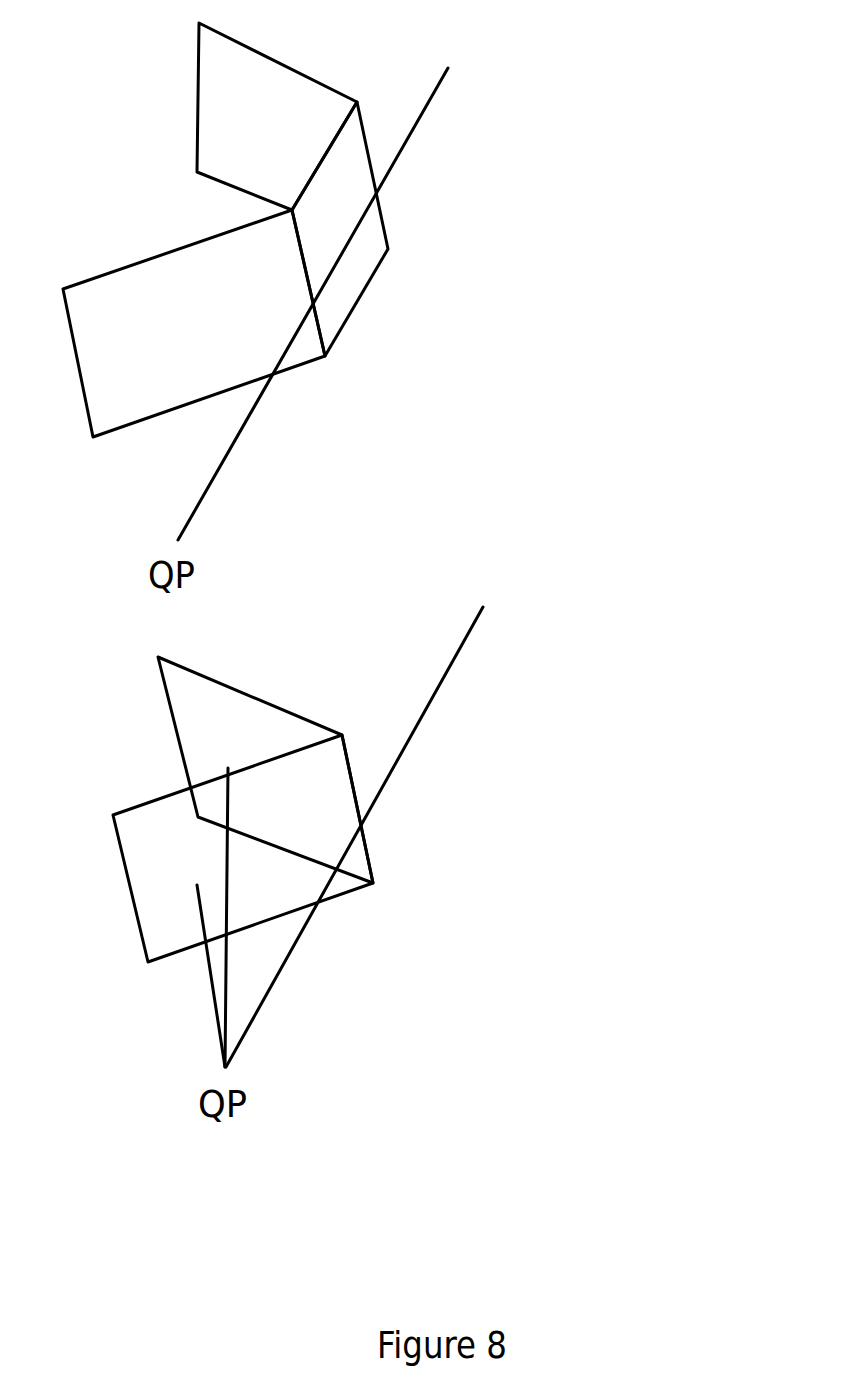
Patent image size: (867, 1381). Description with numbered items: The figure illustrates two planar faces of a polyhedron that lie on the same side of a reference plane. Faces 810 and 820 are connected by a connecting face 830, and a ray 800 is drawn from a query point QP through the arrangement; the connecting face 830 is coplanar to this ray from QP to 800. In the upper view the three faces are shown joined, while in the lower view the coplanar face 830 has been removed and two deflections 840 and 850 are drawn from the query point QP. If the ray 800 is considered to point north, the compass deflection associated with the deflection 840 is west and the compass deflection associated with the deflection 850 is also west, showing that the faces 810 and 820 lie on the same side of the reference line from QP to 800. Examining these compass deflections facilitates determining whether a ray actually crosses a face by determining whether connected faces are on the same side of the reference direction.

The ray 800 is at (352, 542).
The face 810 is at (218, 586).
The face 820 is at (265, 453).
The connecting face 830 is at (360, 297).
The deflection 840 is at (223, 815).
The deflection 850 is at (217, 1007).